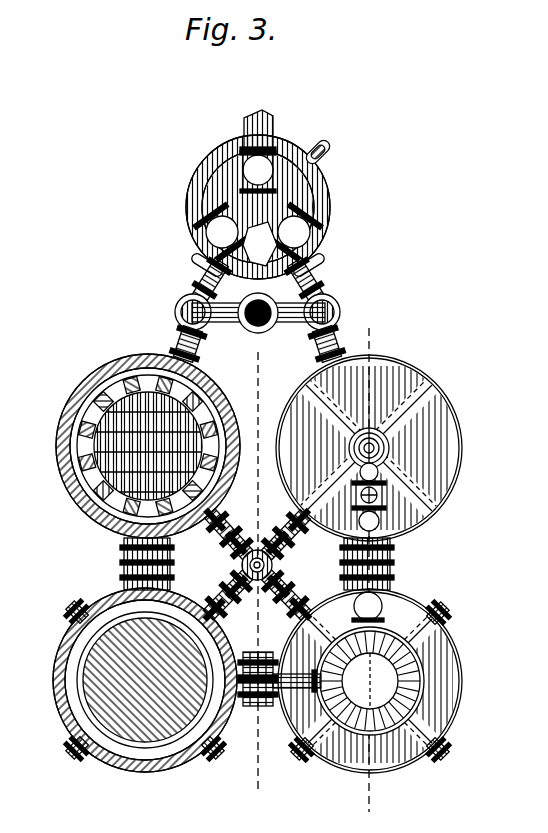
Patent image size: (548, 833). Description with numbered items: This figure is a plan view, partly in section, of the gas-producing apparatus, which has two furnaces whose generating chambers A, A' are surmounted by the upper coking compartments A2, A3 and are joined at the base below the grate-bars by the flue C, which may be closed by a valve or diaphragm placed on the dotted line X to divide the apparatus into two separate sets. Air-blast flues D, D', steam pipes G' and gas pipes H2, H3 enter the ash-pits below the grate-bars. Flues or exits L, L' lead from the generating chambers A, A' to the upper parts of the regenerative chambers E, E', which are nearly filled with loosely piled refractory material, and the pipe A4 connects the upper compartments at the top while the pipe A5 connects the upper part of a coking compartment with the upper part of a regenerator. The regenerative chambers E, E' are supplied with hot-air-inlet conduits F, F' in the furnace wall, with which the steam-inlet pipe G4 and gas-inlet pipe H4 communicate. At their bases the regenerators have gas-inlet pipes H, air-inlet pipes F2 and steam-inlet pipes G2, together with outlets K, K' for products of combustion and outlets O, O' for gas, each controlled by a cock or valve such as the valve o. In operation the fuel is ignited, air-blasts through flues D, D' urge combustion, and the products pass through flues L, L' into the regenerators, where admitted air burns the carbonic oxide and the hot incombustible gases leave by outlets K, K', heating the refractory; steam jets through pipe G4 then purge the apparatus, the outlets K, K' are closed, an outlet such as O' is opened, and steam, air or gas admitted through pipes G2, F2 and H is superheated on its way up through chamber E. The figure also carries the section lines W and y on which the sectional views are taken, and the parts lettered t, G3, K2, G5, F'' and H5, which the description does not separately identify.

The smoke outlet pipe t is at (246, 139).
The valve o is at (258, 196).
The outlet for gas O' is at (205, 241).
The outlet for gas O is at (305, 241).
The left upper connecting pipe G3 is at (199, 290).
The steam-inlet pipe G2 is at (328, 289).
The gas-inlet pipe H is at (222, 285).
The outlet for products of combustion K' is at (183, 312).
The outlet for products of combustion K is at (327, 312).
The stack or exhaust pipe K2 is at (260, 336).
The air-inlet pipe F2 is at (177, 340).
The section line W is at (245, 572).
The section line y is at (370, 576).
The regenerative chamber E' is at (133, 446).
The hot-air-inlet conduit F' is at (133, 446).
The regenerative chamber E is at (377, 448).
The upper compartment A3 is at (384, 499).
The flue or exit L' is at (135, 564).
The flue or exit L is at (375, 564).
The pipe A5 is at (394, 572).
The generating chamber A' is at (134, 680).
The generating chamber A is at (382, 681).
The upper compartment A2 is at (406, 681).
The steam-inlet pipe G4 is at (422, 547).
The steam pipe G' is at (221, 595).
The lower right diagonal pipe G5 is at (324, 589).
The central hub F'' is at (257, 550).
The air-blast flue D' is at (228, 554).
The air-blast flue D is at (261, 571).
The hot-air-inlet conduit F is at (292, 576).
The gas-inlet pipe H4 is at (210, 528).
The gas pipe H2 is at (308, 530).
The gas pipe H3 is at (225, 614).
The flange H5 is at (295, 614).
The flue C is at (256, 693).
The dotted line X is at (258, 687).
The pipe A4 is at (272, 712).